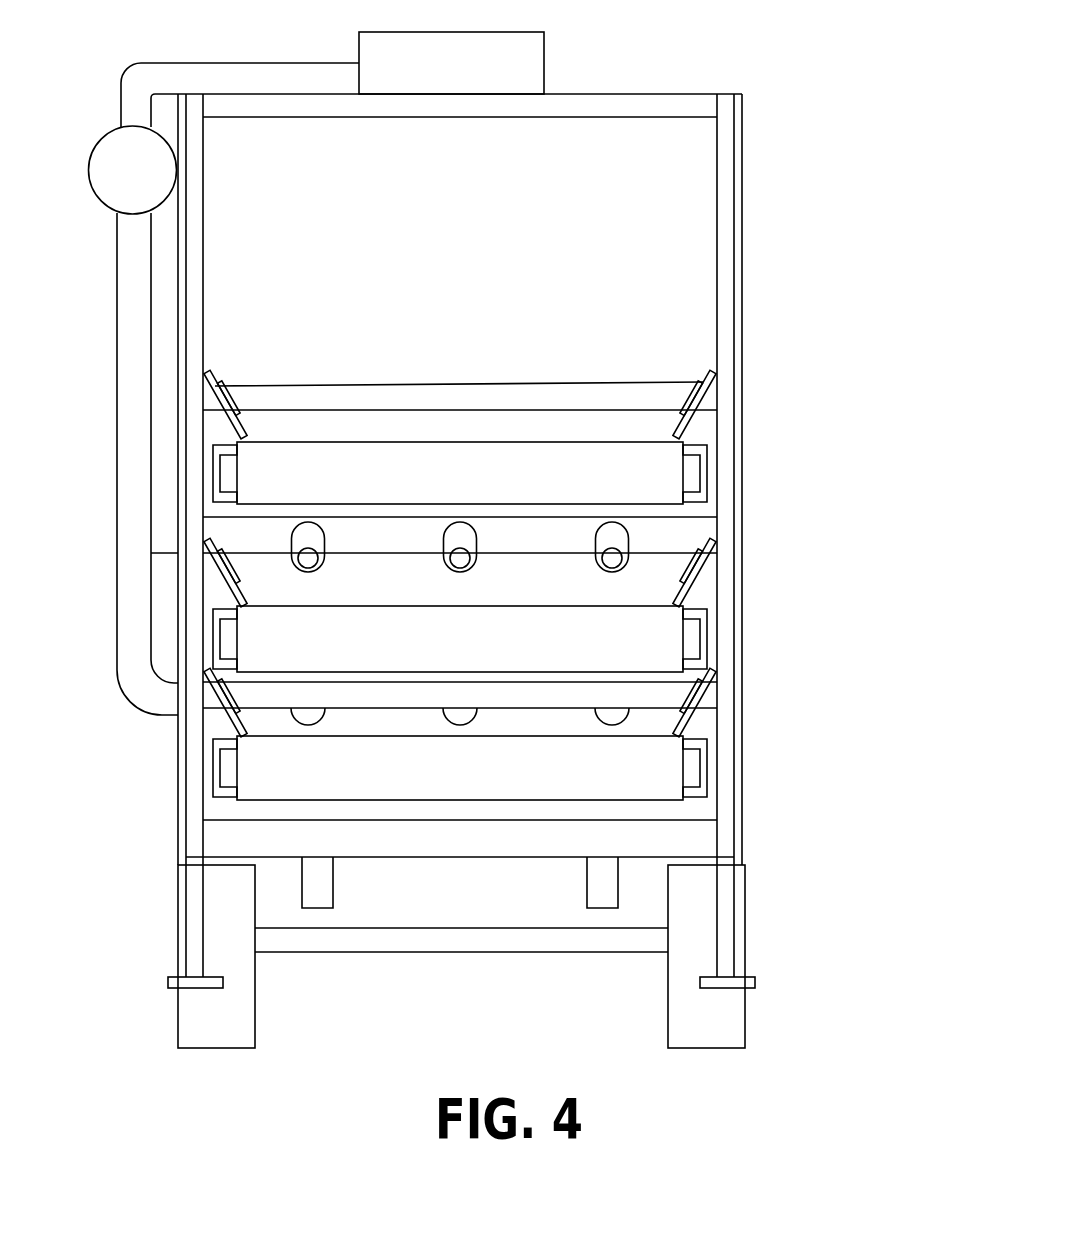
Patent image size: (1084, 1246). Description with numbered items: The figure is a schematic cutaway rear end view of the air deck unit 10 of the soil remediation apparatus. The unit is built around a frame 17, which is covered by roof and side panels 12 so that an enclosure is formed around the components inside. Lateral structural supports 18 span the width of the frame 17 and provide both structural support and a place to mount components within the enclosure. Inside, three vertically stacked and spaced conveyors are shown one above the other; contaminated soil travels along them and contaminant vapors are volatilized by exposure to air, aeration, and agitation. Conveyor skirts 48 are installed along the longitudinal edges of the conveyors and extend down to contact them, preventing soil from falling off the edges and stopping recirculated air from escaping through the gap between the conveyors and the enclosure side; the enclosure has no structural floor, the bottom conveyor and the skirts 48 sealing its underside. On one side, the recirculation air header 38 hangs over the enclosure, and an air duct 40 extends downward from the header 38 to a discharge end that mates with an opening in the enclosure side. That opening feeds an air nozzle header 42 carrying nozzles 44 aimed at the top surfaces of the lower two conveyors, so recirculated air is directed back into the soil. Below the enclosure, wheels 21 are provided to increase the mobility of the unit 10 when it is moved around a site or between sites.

The air deck unit 10 is at (675, 58).
The roof and side panels 12 is at (742, 187).
The frame 17 is at (723, 260).
The lateral structural supports 18 is at (520, 395).
The wheels 21 is at (747, 1012).
The recirculation air header 38 is at (133, 170).
The air duct 40 is at (133, 408).
The air nozzle header 42 is at (225, 533).
The nozzles 44 is at (300, 562).
The conveyor skirts 48 is at (705, 407).